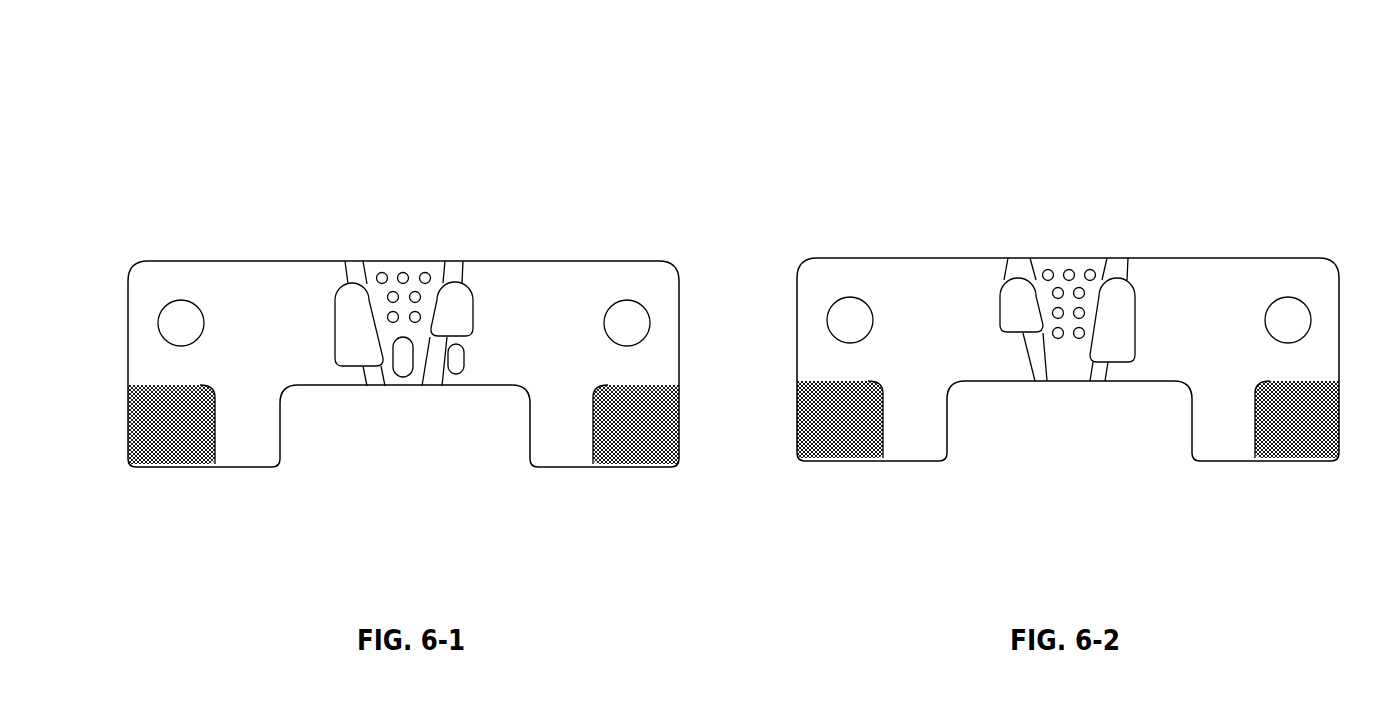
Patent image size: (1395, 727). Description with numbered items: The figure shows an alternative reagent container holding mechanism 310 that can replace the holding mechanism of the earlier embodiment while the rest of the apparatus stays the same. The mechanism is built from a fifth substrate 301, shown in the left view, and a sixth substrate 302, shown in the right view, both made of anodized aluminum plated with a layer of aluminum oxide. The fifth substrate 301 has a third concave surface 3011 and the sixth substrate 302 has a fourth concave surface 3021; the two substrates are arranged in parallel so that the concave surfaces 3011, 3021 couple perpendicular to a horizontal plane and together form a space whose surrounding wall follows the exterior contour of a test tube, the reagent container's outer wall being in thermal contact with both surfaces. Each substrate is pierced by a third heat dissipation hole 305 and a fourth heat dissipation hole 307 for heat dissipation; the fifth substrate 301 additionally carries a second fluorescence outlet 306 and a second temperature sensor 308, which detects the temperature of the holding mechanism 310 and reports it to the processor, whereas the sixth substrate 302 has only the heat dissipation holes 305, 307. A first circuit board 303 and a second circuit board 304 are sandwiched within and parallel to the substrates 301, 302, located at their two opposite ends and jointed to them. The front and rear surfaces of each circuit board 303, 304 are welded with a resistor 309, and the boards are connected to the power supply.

In FIG. 6-1, the reagent container holding mechanism 310 is at (140, 95).
In FIG. 6-1, the fifth substrate 301 is at (240, 260).
In FIG. 6-2, the sixth substrate 302 is at (882, 258).
In FIG. 6-1, the first circuit board 303 is at (183, 465).
In FIG. 6-2, the first circuit board 303 is at (1300, 460).
In FIG. 6-1, the second circuit board 304 is at (632, 462).
In FIG. 6-2, the second circuit board 304 is at (837, 460).
In FIG. 6-1, the third heat dissipation hole 305 is at (428, 276).
In FIG. 6-2, the third heat dissipation hole 305 is at (1092, 273).
In FIG. 6-1, the second fluorescence outlet 306 is at (403, 378).
In FIG. 6-1, the fourth heat dissipation hole 307 is at (462, 310).
In FIG. 6-2, the fourth heat dissipation hole 307 is at (1025, 307).
In FIG. 6-1, the second temperature sensor 308 is at (457, 375).
In FIG. 6-1, the resistor 309 is at (181, 320).
In FIG. 6-2, the resistor 309 is at (745, 259).
In FIG. 6-1, the third concave surface 3011 is at (383, 292).
In FIG. 6-2, the fourth concave surface 3021 is at (1068, 313).